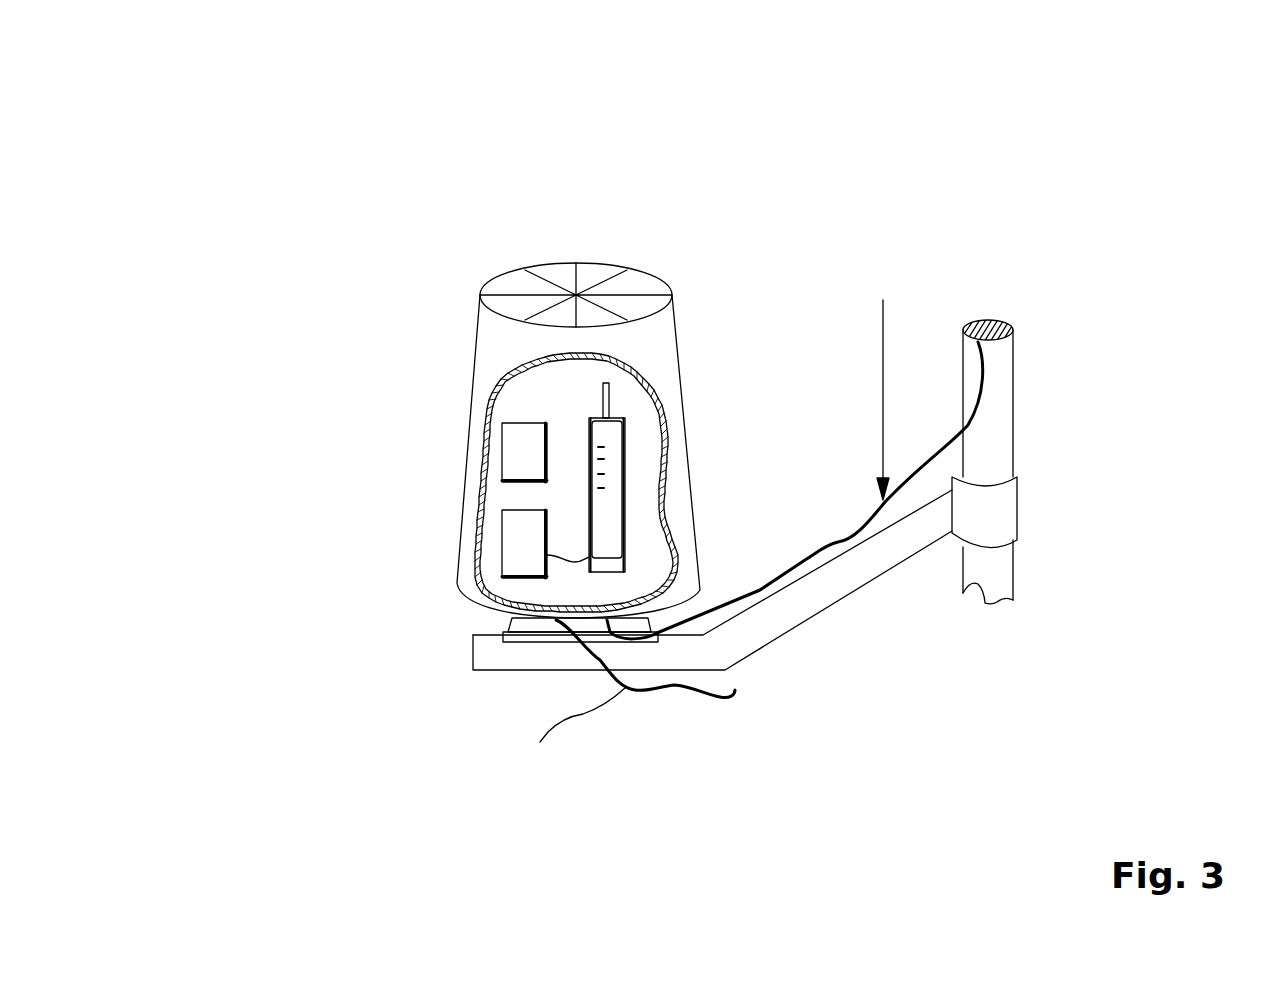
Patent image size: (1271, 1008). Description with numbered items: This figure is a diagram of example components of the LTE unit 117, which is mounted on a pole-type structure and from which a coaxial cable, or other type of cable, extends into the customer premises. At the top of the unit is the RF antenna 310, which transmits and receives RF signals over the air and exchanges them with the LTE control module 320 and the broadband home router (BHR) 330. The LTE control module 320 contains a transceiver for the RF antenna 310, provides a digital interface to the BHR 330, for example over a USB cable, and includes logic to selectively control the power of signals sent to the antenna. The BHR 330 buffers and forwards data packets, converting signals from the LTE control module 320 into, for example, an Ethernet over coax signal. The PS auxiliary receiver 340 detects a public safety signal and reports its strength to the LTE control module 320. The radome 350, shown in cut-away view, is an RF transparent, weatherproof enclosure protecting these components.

The LTE unit 117 is at (193, 64).
The RF antenna 310 is at (608, 275).
The LTE control module 320 is at (502, 560).
The broadband home router (BHR) 330 is at (625, 425).
The PS auxiliary receiver 340 is at (502, 467).
The radome 350 is at (487, 335).